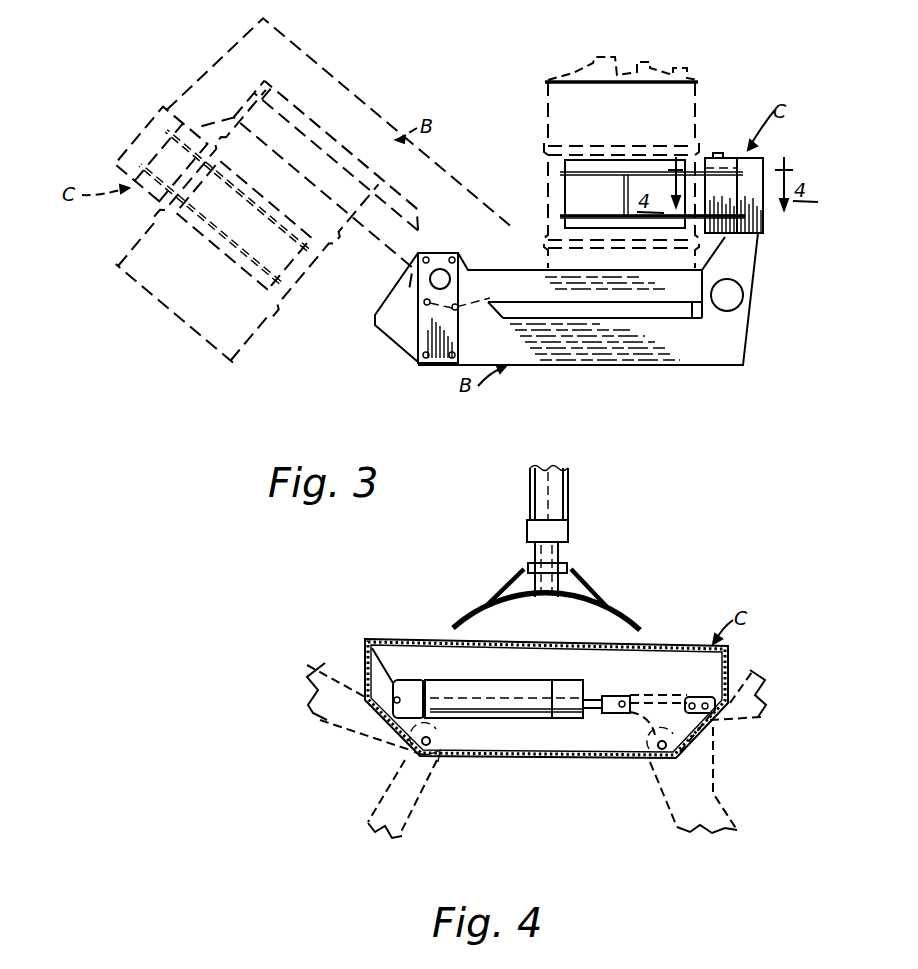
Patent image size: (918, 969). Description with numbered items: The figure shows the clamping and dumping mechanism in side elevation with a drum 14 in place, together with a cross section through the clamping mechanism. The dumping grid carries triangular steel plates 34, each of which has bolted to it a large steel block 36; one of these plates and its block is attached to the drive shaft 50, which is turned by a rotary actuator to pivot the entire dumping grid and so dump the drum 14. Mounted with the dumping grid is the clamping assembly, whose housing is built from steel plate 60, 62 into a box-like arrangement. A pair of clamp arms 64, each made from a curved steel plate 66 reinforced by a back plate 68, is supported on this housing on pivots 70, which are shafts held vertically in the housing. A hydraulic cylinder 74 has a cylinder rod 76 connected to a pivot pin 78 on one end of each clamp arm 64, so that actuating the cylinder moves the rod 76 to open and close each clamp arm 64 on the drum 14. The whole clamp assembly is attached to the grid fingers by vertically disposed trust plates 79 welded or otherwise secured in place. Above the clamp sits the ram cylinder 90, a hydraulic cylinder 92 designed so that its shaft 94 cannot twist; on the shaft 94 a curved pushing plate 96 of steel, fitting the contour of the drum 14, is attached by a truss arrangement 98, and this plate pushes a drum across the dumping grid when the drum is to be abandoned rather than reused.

In FIG. 3, the drum 14 is at (700, 103).
In FIG. 3, the triangular steel plate 34 is at (393, 328).
In FIG. 3, the steel block 36 is at (430, 363).
In FIG. 3, the drive shaft 50 is at (438, 270).
In FIG. 3, the steel plate 60 is at (745, 158).
In FIG. 3, the steel plate 62 is at (765, 220).
In FIG. 4, the steel plate 62 is at (707, 643).
In FIG. 3, the clamp arm 64 is at (562, 188).
In FIG. 4, the clamp arm 64 is at (384, 749).
In FIG. 3, the curved steel plate 66 is at (598, 207).
In FIG. 3, the back plate 68 is at (560, 217).
In FIG. 4, the back plate 68 is at (352, 730).
In FIG. 3, the pivot 70 is at (716, 153).
In FIG. 4, the pivot 70 is at (432, 741).
In FIG. 4, the hydraulic cylinder 74 is at (498, 682).
In FIG. 4, the cylinder rod 76 is at (618, 696).
In FIG. 4, the pivot pin 78 is at (636, 692).
In FIG. 3, the trust plate 79 is at (748, 254).
In FIG. 4, the ram cylinder 90 is at (571, 511).
In FIG. 4, the hydraulic cylinder 92 is at (542, 499).
In FIG. 4, the shaft 94 is at (560, 553).
In FIG. 4, the curved pushing plate 96 is at (627, 614).
In FIG. 4, the truss arrangement 98 is at (496, 594).